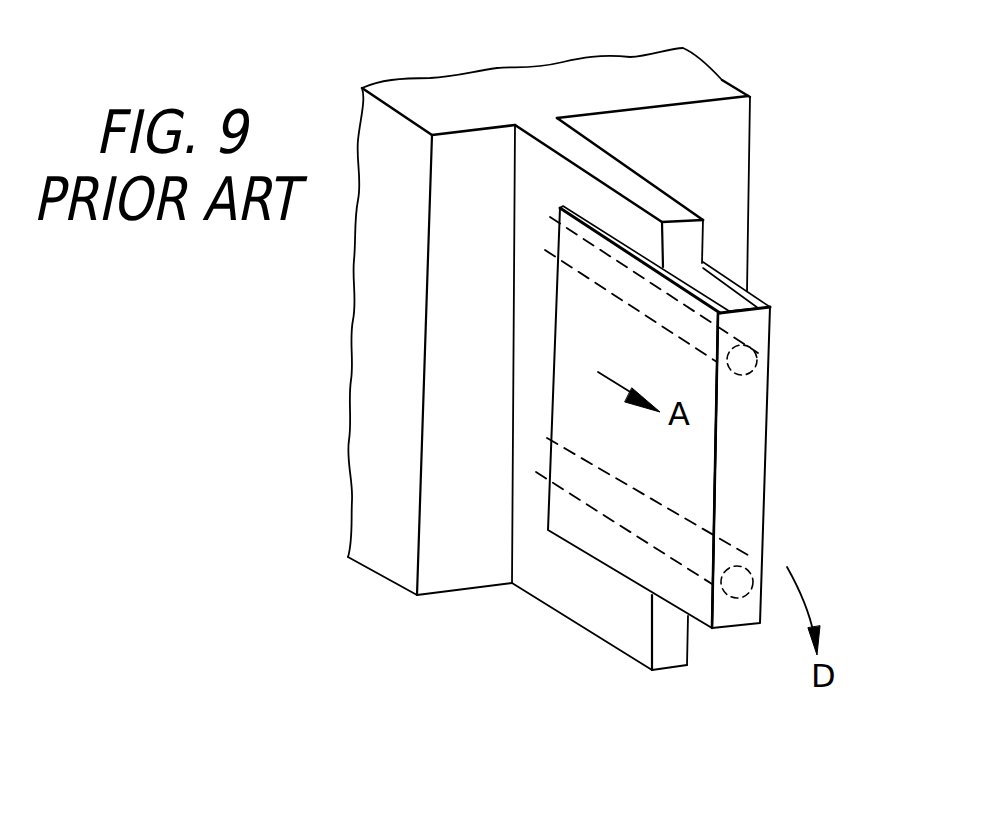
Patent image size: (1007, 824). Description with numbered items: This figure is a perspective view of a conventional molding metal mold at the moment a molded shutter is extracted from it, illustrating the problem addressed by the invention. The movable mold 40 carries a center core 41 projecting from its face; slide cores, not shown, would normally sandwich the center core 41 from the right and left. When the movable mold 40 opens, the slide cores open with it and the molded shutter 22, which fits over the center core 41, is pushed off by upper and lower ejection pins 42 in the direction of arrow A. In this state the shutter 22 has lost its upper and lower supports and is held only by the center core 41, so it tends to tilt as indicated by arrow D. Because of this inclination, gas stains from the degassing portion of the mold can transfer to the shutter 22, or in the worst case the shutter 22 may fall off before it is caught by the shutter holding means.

The movable mold 40 is at (722, 80).
The center core 41 is at (658, 205).
The shutter 22 is at (773, 312).
The ejection pins 42 is at (755, 360).